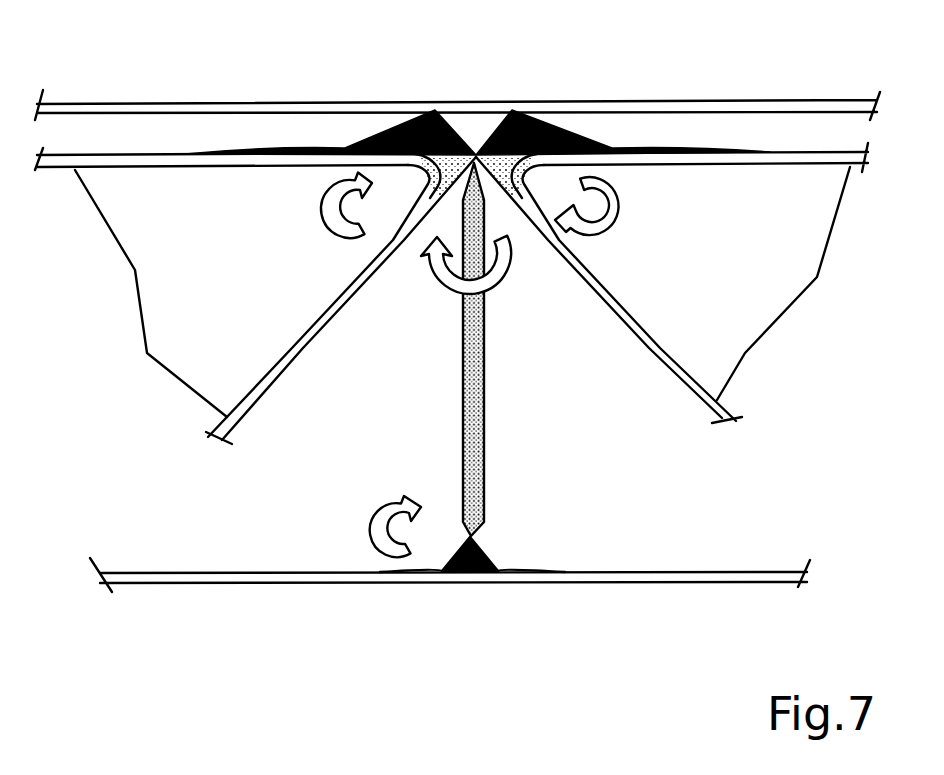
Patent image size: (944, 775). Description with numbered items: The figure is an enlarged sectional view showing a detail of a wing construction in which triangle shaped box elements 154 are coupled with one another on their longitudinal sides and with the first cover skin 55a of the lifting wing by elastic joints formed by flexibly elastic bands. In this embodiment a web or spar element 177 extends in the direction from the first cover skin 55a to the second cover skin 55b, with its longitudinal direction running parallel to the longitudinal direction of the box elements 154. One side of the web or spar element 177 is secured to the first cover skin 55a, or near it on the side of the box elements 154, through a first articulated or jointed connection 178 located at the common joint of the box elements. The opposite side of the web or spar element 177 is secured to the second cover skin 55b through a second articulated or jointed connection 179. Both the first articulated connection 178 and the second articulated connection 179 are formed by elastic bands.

The first cover skin 55a is at (727, 102).
The second cover skin 55b is at (297, 577).
The box element 154 is at (245, 341).
The web or spar element 177 is at (462, 430).
The first articulated or jointed connection 178 is at (513, 207).
The second articulated or jointed connection 179 is at (477, 535).